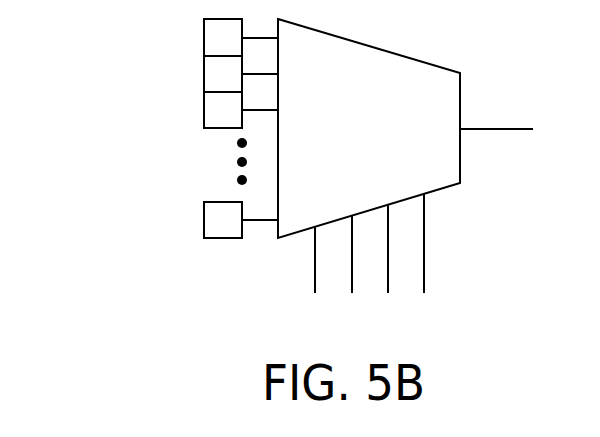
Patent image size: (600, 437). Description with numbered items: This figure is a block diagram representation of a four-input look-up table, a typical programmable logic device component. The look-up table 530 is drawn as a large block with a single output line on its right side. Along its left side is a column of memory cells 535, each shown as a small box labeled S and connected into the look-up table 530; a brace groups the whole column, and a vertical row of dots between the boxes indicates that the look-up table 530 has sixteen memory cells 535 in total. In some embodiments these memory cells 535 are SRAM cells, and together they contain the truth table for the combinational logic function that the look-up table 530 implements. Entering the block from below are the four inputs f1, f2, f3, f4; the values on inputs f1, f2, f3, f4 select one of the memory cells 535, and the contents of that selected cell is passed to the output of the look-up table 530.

The 4-LUT 530 is at (348, 139).
The memory cells 535 is at (168, 19).
The input f1 is at (315, 276).
The input f2 is at (352, 270).
The input f3 is at (387, 265).
The input f4 is at (423, 259).